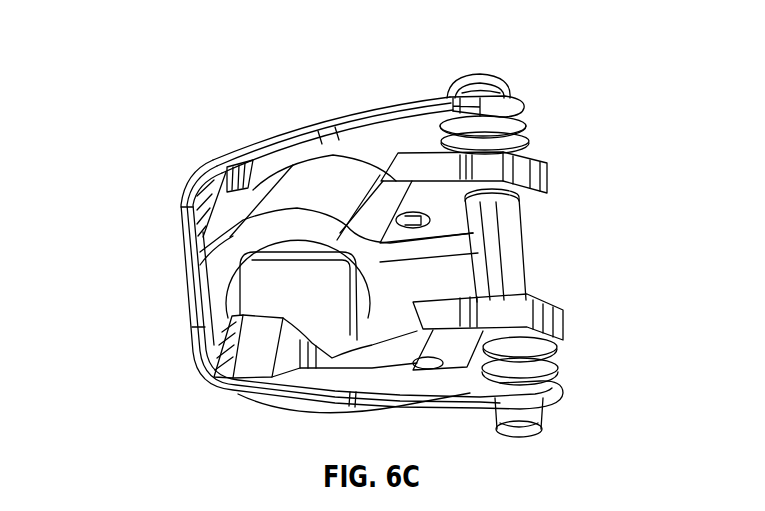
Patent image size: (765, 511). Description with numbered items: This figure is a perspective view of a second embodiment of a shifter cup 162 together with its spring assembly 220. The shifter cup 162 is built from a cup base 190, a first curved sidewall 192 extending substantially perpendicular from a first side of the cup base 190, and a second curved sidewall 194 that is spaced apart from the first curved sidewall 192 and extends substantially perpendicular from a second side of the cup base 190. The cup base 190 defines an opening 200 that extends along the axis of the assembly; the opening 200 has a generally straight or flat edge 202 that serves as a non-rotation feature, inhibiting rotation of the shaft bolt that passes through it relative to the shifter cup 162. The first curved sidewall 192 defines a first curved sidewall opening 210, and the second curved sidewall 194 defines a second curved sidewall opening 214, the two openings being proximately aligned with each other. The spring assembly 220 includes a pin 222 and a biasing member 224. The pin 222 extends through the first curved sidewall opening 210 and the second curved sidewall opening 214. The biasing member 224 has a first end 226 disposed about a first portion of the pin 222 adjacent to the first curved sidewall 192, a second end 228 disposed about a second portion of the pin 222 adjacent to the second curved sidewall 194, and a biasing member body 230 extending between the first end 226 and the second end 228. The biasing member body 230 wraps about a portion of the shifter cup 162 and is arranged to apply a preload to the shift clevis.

The shifter cup 162 is at (550, 153).
The cup base 190 is at (462, 282).
The first curved sidewall 192 is at (361, 385).
The second curved sidewall 194 is at (362, 125).
The opening 200 is at (258, 268).
The straight or flat edge 202 is at (350, 318).
The first curved sidewall opening 210 is at (427, 355).
The second curved sidewall opening 214 is at (417, 212).
The spring assembly 220 is at (580, 391).
The pin 222 is at (485, 66).
The biasing member 224 is at (203, 157).
The first end 226 is at (557, 371).
The second end 228 is at (523, 133).
The biasing member body 230 is at (185, 187).